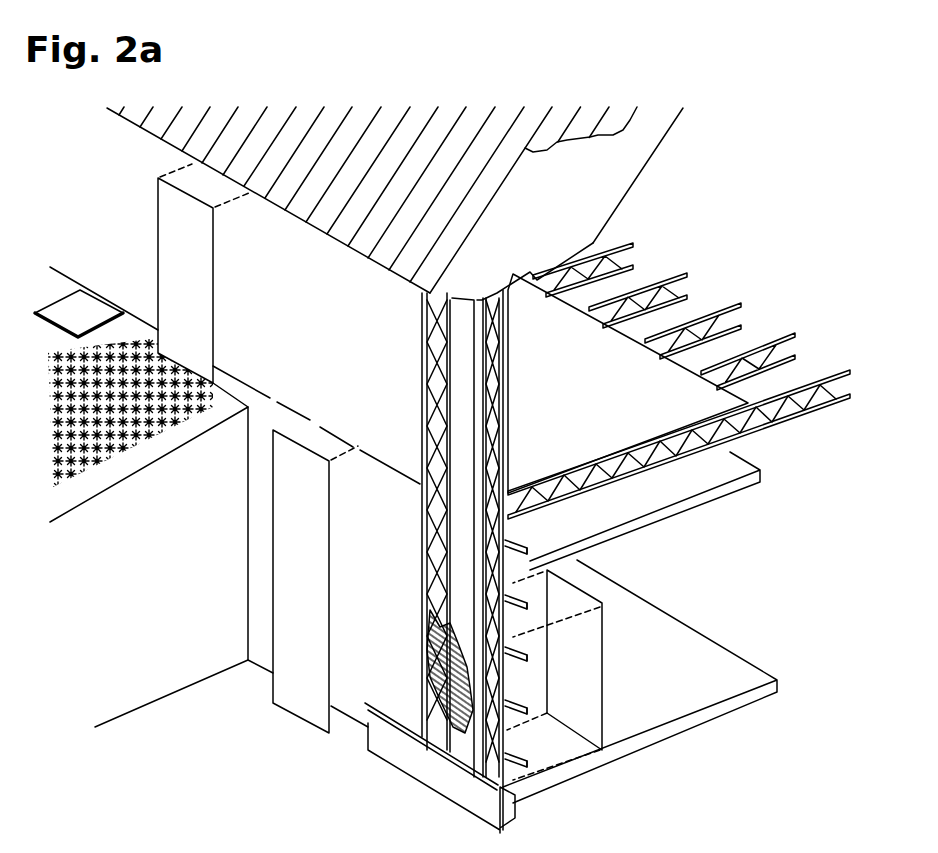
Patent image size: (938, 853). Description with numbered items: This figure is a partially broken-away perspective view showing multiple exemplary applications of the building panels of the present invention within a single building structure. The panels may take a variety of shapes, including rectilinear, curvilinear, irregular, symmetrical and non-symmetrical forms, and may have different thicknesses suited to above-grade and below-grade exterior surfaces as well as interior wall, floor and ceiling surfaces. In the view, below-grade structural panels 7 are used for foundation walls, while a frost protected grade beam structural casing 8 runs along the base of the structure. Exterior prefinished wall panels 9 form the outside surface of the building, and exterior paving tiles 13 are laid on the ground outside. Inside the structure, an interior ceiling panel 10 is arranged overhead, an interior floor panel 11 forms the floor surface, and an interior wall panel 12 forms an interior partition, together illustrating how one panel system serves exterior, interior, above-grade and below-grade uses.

The below-grade structural panel 7 is at (315, 581).
The frost protected grade beam structural casing 8 is at (428, 765).
The exterior prefinished wall panel 9 is at (203, 273).
The interior ceiling panel 10 is at (679, 470).
The interior floor panel 11 is at (628, 383).
The interior wall panel 12 is at (554, 675).
The exterior paving tile 13 is at (79, 313).